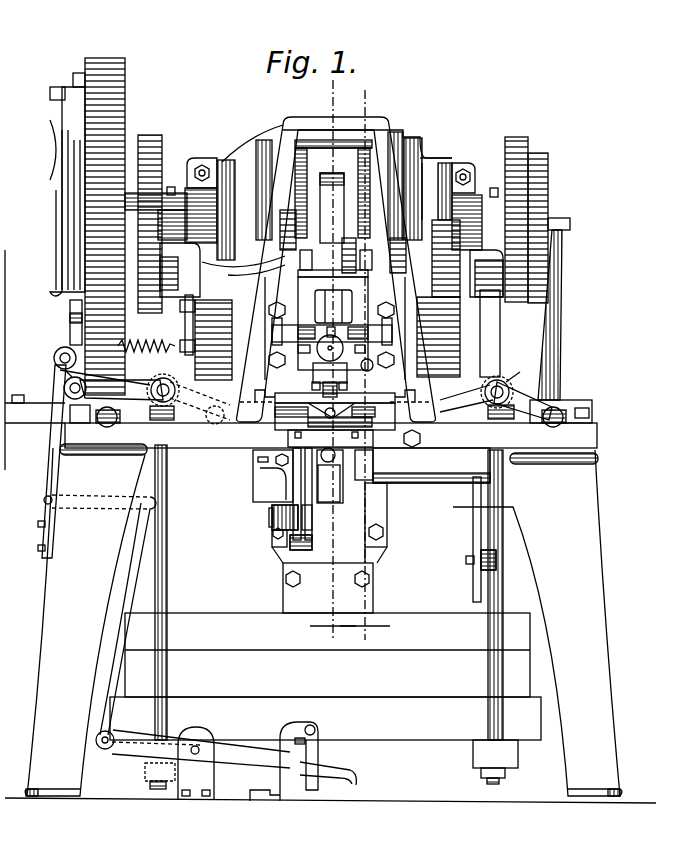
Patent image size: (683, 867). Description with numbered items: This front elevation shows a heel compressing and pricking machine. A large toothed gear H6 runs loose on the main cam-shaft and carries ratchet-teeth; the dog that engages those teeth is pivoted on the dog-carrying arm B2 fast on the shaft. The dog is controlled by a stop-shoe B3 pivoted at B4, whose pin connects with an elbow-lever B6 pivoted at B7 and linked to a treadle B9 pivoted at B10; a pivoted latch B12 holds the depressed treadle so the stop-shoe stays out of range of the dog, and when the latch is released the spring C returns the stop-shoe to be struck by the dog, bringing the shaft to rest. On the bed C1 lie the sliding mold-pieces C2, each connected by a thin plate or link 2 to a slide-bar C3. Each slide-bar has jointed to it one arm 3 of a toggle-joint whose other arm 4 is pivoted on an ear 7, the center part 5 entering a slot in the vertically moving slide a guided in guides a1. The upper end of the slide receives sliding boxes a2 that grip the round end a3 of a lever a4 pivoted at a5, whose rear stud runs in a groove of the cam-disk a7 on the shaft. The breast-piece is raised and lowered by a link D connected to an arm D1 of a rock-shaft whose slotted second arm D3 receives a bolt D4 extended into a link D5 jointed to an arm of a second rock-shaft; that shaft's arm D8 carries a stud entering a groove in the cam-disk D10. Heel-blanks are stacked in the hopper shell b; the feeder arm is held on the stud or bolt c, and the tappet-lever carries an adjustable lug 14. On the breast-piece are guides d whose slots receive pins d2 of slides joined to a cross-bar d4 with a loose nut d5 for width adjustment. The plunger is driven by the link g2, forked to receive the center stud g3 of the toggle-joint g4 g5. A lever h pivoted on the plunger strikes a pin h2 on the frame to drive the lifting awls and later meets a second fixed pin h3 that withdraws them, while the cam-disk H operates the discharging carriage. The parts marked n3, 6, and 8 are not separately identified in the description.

The toothed gear H6 is at (127, 98).
The cam-disk a7 is at (152, 137).
The dog-carrying arm B2 is at (53, 160).
The cam-disk D10 is at (544, 195).
The toggle-joint arm g4 is at (333, 189).
The center pin or stud g3 is at (280, 228).
The bearing n3 is at (278, 242).
The link g2 is at (332, 208).
The toggle-joint arm g5 is at (318, 275).
The second fixed pin h3 is at (336, 261).
The round end of lever a3 is at (143, 758).
The pivot of lever a5 is at (135, 290).
The guides a1 is at (483, 340).
The stop-shoe B3 is at (70, 325).
The spring C is at (146, 337).
The guides d is at (188, 335).
The cam-disk H is at (334, 269).
The toggle-joint-actuating slide a is at (66, 366).
The center part of toggle-joint 5 is at (284, 373).
The toggle-joint arm 4 is at (316, 400).
The toggle-joint arm 3 is at (331, 403).
The ear 7 is at (122, 416).
The pivot of stop-shoe B4 is at (62, 385).
The elbow-lever B6 is at (55, 445).
The slide-bar C3 is at (328, 536).
The sliding pieces of the mold C2 is at (276, 445).
The thin metal plate or link 2 is at (335, 389).
The cross-bar d4 is at (335, 405).
The loose nut d5 is at (335, 422).
The bearing 8 is at (566, 410).
The link D is at (422, 457).
The arm of rock-shaft D1 is at (379, 512).
The shell or frame of hopper b is at (335, 328).
The slot 6 is at (333, 306).
The lever h is at (367, 362).
The pin h2 is at (371, 372).
The second arm of rock-shaft D8 is at (560, 331).
The pivot of elbow-lever B7 is at (44, 500).
The pins d2 is at (318, 494).
The stud or bolt c is at (272, 520).
The bed C1 is at (312, 519).
The lug 14 is at (328, 581).
The second arm of rock-shaft D3 is at (466, 539).
The link D5 is at (475, 545).
The bolt D4 is at (468, 562).
The sliding boxes a2 is at (228, 618).
The treadle B9 is at (118, 584).
The lever a4 is at (160, 690).
The pivot of treadle B10 is at (198, 742).
The pivoted latch B12 is at (312, 752).